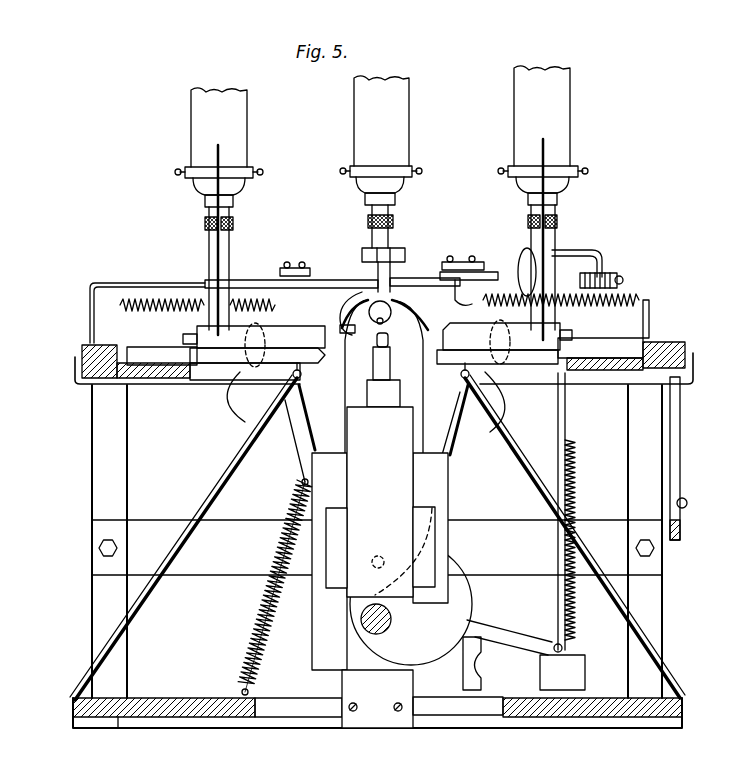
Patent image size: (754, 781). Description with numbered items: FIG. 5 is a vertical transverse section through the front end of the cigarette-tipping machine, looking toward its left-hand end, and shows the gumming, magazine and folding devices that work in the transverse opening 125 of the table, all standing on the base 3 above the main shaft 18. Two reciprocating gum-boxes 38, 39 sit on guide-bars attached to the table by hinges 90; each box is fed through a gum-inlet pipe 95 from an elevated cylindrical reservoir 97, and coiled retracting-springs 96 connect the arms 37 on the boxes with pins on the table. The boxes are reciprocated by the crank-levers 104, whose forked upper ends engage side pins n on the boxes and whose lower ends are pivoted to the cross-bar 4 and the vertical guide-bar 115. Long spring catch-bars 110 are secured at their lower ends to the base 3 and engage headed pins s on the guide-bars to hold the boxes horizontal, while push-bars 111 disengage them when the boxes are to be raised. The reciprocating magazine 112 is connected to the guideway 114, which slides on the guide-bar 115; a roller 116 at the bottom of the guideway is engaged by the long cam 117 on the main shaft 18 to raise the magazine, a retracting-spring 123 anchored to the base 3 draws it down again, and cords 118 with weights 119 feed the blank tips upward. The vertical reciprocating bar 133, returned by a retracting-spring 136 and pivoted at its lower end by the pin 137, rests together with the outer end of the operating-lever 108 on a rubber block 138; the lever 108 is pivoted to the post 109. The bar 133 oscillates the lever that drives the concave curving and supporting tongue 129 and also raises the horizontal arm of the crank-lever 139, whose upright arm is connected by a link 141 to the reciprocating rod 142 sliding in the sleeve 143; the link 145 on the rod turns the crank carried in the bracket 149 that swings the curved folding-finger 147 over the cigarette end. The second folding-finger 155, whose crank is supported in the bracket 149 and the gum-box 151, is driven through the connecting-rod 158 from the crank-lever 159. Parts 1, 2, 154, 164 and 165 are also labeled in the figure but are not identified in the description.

The bearing block 1 is at (82, 352).
The frame upright 2 is at (668, 626).
The base 3 is at (172, 718).
The cross-bar 4 is at (151, 530).
The main shaft 18 is at (377, 634).
The arms 37 is at (293, 268).
The gum-box 38 is at (257, 344).
The gum-box 39 is at (498, 343).
The hinges 90 is at (123, 348).
The gum-inlet pipe 95 is at (207, 245).
The coiled retracting-springs 96 is at (152, 300).
The cylindrical reservoir 97 is at (378, 136).
The crank-levers 104 is at (248, 398).
The operating-lever 108 is at (503, 632).
The post 109 is at (452, 700).
The spring catch-bars 110 is at (238, 463).
The push-bars 111 is at (75, 381).
The reciprocating magazine 112 is at (380, 538).
The guideway 114 is at (302, 484).
The vertical guide-bar 115 is at (378, 716).
The roller 116 is at (377, 556).
The long cam 117 is at (468, 594).
The cords 118 is at (428, 494).
The weights 119 is at (428, 543).
The retracting-spring 123 is at (270, 605).
The transverse opening 125 is at (205, 372).
The concave tongue 129 is at (384, 376).
The vertical reciprocating bar 133 is at (567, 420).
The retracting-spring 136 is at (575, 620).
The pin 137 is at (563, 650).
The rubber block 138 is at (562, 673).
The crank-lever 139 is at (522, 250).
The link 141 is at (589, 253).
The reciprocating rod 142 is at (605, 275).
The sleeve 143 is at (498, 272).
The link 145 is at (420, 278).
The curved folding-finger 147 is at (405, 308).
The bracket 149 is at (396, 243).
The gum-box 151 is at (370, 370).
The middle cylinder 154 is at (405, 119).
The second curved folding-finger 155 is at (350, 318).
The connecting-rod 158 is at (362, 257).
The crank-lever 159 is at (90, 302).
The bar 164 is at (681, 455).
The pin 165 is at (688, 504).
The side pins n is at (373, 343).
The headed pins s is at (381, 389).